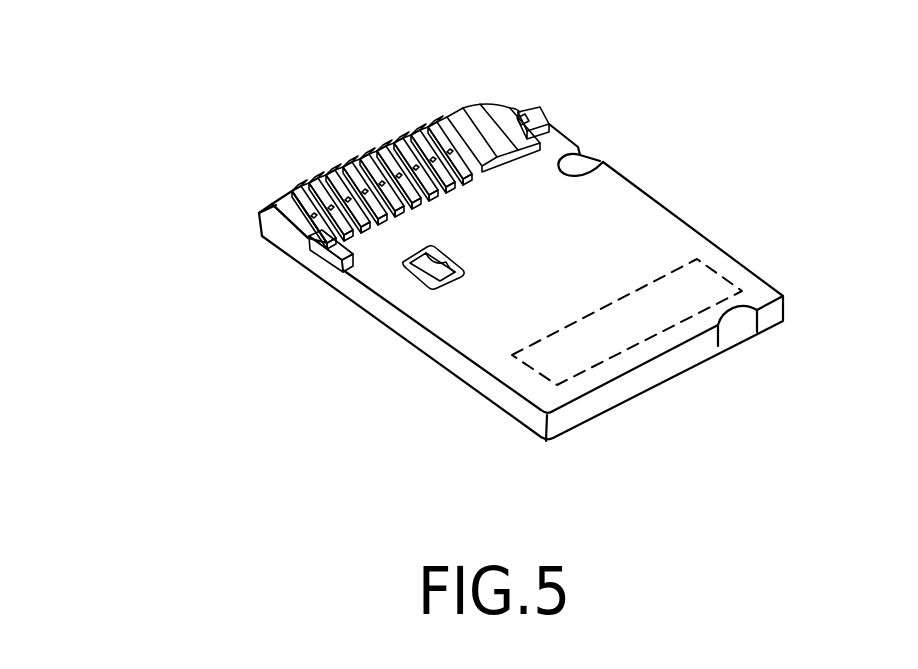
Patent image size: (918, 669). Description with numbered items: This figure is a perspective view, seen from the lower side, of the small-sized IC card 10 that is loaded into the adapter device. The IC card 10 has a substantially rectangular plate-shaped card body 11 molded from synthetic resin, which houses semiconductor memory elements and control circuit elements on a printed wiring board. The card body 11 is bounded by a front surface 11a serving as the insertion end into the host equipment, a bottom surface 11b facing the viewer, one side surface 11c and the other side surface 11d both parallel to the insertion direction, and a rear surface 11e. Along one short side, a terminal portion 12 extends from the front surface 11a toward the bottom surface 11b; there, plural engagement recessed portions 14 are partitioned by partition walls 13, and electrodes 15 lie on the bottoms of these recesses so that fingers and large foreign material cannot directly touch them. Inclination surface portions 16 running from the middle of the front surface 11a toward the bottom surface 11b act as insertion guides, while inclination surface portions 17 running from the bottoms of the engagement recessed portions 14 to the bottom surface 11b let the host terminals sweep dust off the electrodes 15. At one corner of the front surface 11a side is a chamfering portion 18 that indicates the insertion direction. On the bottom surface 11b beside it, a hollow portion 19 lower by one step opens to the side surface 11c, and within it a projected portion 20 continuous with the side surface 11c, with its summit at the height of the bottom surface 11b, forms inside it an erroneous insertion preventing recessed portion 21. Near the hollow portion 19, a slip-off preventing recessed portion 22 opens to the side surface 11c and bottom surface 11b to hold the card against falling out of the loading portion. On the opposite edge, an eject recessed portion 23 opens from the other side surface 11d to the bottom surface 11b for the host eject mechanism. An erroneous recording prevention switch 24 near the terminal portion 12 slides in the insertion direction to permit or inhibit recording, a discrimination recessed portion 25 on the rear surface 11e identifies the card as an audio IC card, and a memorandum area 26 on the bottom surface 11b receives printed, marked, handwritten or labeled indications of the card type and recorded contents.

The IC card 10 is at (640, 97).
The card body 11 is at (697, 237).
The front surface 11a is at (266, 207).
The bottom surface 11b is at (473, 340).
The side surface 11c is at (738, 253).
The other side surface 11d is at (381, 308).
The rear surface 11e is at (576, 426).
The terminal portion 12 is at (389, 136).
The partition walls 13 is at (436, 122).
The engagement recessed portions 14 is at (310, 182).
The electrodes 15 is at (292, 190).
The inclination surface portions 16 is at (366, 157).
The inclination surface portions 17 is at (470, 181).
The chamfering portion 18 is at (494, 106).
The hollow portion 19 is at (511, 108).
The projected portion 20 is at (548, 125).
The erroneous insertion preventing recessed portion 21 is at (523, 118).
The slip-off preventing recessed portion 22 is at (583, 158).
The eject recessed portion 23 is at (318, 256).
The erroneous recording prevention switch 24 is at (450, 260).
The discrimination recessed portion 25 is at (722, 330).
The memorandum area 26 is at (623, 348).